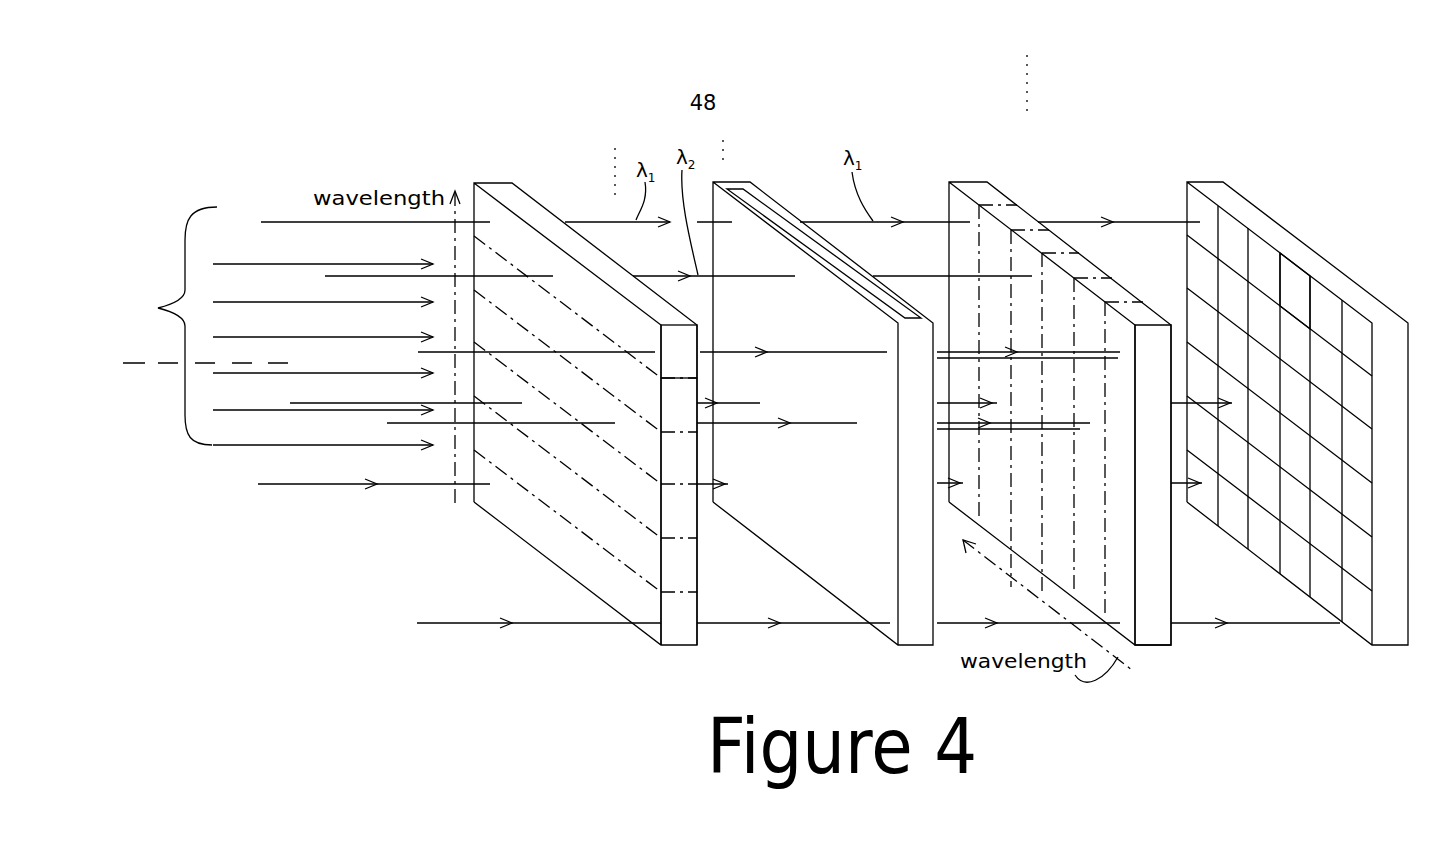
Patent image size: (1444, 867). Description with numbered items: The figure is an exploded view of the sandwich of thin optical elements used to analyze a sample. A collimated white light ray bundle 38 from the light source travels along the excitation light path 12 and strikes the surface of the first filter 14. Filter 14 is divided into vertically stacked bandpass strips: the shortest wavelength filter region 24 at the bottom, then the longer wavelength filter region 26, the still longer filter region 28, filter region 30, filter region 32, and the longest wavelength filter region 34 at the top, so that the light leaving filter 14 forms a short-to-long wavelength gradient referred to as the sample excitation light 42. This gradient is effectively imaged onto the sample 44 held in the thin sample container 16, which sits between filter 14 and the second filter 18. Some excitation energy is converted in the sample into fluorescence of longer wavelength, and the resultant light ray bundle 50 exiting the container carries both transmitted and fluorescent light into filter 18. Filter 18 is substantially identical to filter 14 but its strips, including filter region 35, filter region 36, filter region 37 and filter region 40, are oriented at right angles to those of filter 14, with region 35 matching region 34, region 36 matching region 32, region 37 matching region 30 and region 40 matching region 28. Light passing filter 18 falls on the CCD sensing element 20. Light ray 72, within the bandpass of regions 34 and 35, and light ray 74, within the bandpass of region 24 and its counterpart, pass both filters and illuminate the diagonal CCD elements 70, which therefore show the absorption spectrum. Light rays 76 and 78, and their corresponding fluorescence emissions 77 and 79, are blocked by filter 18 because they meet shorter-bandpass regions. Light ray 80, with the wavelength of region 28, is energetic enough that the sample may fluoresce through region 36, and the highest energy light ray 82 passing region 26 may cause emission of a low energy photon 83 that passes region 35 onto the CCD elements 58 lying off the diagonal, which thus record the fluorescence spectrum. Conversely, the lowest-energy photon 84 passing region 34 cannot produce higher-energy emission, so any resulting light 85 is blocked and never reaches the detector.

The excitation light path 12 is at (121, 383).
The filter 14 is at (584, 385).
The sample container 16 is at (748, 193).
The filter 18 is at (1061, 366).
The sensing element 20 is at (1291, 401).
The shortest wavelength filter region 24 is at (679, 618).
The longer wavelength filter region 26 is at (679, 565).
The still longer wavelength filter region 28 is at (679, 511).
The filter region 30 is at (679, 458).
The filter region 32 is at (679, 405).
The longest wavelength bandpass filter region 34 is at (679, 351).
The filter region 35 is at (988, 190).
The filter region 36 is at (1007, 215).
The filter region 37 is at (1040, 244).
The white light ray bundle 38 is at (412, 128).
The filter region 40 is at (1080, 265).
The sample excitation light 42 is at (1138, 96).
The sample 44 is at (1138, 292).
The resultant light ray bundle 50 is at (1030, 67).
The CCD elements 58 is at (1222, 575).
The CCD elements 70 is at (1192, 200).
The light ray 72 is at (300, 223).
The light ray 74 is at (475, 625).
The light ray 76 is at (582, 351).
The fluorescence emission 77 is at (1053, 360).
The light ray 78 is at (596, 422).
The fluorescence emission 79 is at (1032, 430).
The light ray 80 is at (355, 397).
The highest energy light ray 82 is at (337, 485).
The low energy photon 83 is at (953, 495).
The photon of light energy 84 is at (493, 272).
The light 85 is at (903, 275).